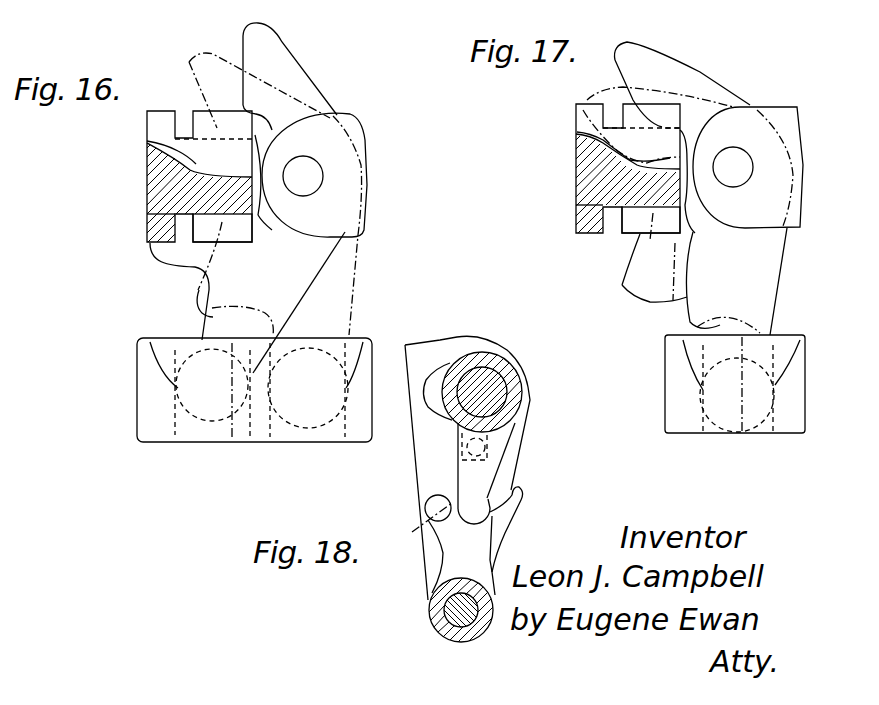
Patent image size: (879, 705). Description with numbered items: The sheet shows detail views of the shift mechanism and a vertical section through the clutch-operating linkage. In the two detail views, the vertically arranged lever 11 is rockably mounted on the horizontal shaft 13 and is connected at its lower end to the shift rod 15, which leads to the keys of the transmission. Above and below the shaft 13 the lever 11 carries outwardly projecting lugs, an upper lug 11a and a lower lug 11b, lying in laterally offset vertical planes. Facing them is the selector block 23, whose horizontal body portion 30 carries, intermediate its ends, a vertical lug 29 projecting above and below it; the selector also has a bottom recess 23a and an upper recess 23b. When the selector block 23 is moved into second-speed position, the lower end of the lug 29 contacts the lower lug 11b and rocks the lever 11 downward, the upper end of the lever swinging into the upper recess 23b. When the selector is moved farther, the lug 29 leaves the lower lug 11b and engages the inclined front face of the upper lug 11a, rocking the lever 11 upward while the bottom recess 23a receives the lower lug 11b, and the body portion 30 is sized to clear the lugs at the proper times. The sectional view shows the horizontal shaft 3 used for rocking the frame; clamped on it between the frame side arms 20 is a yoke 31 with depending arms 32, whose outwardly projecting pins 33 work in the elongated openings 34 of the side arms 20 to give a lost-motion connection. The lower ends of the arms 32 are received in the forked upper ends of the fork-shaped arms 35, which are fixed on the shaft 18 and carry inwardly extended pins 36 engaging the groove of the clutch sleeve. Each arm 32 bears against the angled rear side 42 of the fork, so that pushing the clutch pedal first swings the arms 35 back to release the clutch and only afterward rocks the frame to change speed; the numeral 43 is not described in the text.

In FIG. 16, the lever 11 is at (352, 127).
In FIG. 17, the lever 11 is at (779, 107).
In FIG. 16, the upper lug 11a is at (204, 31).
In FIG. 17, the upper lug 11a is at (657, 53).
In FIG. 16, the lower lug 11b is at (146, 296).
In FIG. 17, the lower lug 11b is at (623, 285).
In FIG. 16, the horizontal shaft 13 is at (313, 174).
In FIG. 17, the horizontal shaft 13 is at (735, 155).
In FIG. 16, the shift rod 15 is at (168, 341).
In FIG. 16, the selector block 23 is at (147, 183).
In FIG. 17, the selector block 23 is at (573, 178).
In FIG. 16, the bottom recess 23a is at (148, 217).
In FIG. 17, the bottom recess 23a is at (576, 211).
In FIG. 16, the upper recess 23b is at (150, 143).
In FIG. 17, the upper recess 23b is at (576, 133).
In FIG. 16, the vertical lug 29 is at (234, 245).
In FIG. 17, the vertical lug 29 is at (622, 237).
In FIG. 16, the horizontal body portion 30 is at (275, 222).
In FIG. 17, the horizontal body portion 30 is at (650, 238).
In FIG. 18, the side arms 20 is at (430, 343).
In FIG. 18, the elongated openings 34 is at (442, 362).
In FIG. 18, the horizontal shaft 3 is at (503, 378).
In FIG. 18, the yoke 31 is at (518, 401).
In FIG. 18, the pins 33 is at (497, 440).
In FIG. 18, the depending arms 32 is at (483, 472).
In FIG. 18, the inwardly extended pins 36 is at (425, 508).
In FIG. 18, the rear side of the fork 42 is at (505, 509).
In FIG. 18, the slot 43 is at (415, 531).
In FIG. 18, the fork-shaped arms 35 is at (475, 552).
In FIG. 18, the shaft 18 is at (430, 606).